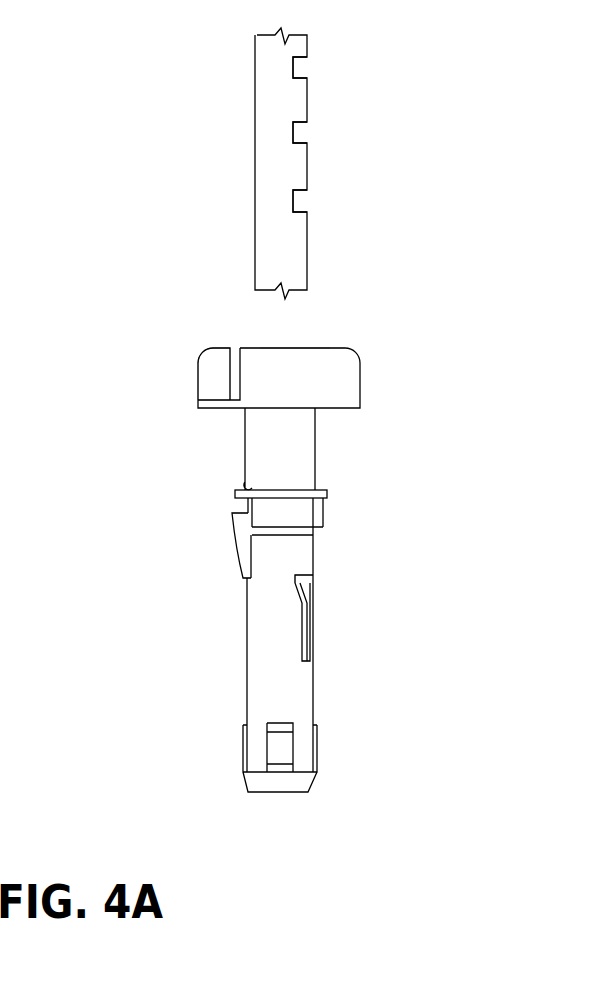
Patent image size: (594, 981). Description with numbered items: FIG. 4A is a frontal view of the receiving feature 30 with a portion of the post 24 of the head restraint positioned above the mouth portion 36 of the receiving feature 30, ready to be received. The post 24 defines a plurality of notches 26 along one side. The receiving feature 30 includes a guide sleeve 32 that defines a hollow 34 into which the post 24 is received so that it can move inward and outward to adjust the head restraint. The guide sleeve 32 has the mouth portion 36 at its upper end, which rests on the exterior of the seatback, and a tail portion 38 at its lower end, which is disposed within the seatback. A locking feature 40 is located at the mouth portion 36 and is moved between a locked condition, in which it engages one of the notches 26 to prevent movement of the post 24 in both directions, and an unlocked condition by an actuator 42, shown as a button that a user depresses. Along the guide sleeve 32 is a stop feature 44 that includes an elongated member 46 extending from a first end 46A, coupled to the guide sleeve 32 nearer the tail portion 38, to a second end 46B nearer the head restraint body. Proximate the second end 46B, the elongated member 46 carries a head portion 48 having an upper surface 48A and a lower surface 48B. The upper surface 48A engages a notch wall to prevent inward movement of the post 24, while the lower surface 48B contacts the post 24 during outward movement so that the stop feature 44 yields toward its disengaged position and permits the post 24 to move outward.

The post 24 is at (252, 122).
The plurality of notches 26 is at (303, 197).
The receiving feature 30 is at (366, 350).
The guide sleeve 32 is at (315, 475).
The hollow 34 is at (296, 340).
The mouth portion 36 is at (273, 360).
The tail portion 38 is at (278, 793).
The locking feature 40 is at (196, 386).
The actuator 42 is at (213, 362).
The stop feature 44 is at (320, 623).
The elongated member 46 is at (313, 607).
The first end 46A is at (312, 655).
The second end 46B is at (293, 589).
The head portion 48 is at (293, 589).
The upper surface 48A is at (307, 575).
The lower surface 48B is at (300, 601).